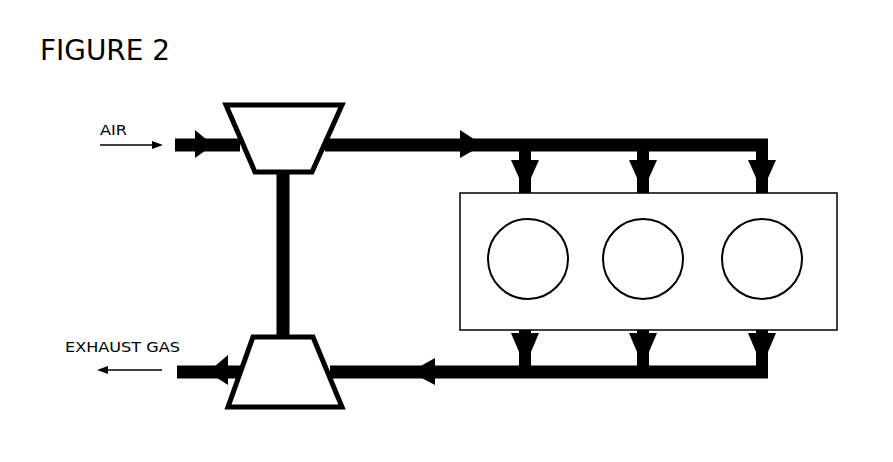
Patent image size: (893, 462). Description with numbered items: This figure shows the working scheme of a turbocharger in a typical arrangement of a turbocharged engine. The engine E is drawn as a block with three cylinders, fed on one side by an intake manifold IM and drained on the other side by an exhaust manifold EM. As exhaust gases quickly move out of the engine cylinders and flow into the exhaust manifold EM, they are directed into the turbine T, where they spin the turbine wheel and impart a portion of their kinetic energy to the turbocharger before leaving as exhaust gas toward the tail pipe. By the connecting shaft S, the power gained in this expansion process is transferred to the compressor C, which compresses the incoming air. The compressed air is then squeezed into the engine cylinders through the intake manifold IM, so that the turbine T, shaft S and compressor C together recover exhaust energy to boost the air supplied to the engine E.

The compressor C is at (252, 173).
The shaft S is at (276, 242).
The turbine T is at (253, 340).
The intake manifold IM is at (573, 138).
The exhaust manifold EM is at (630, 380).
The engine E is at (648, 261).